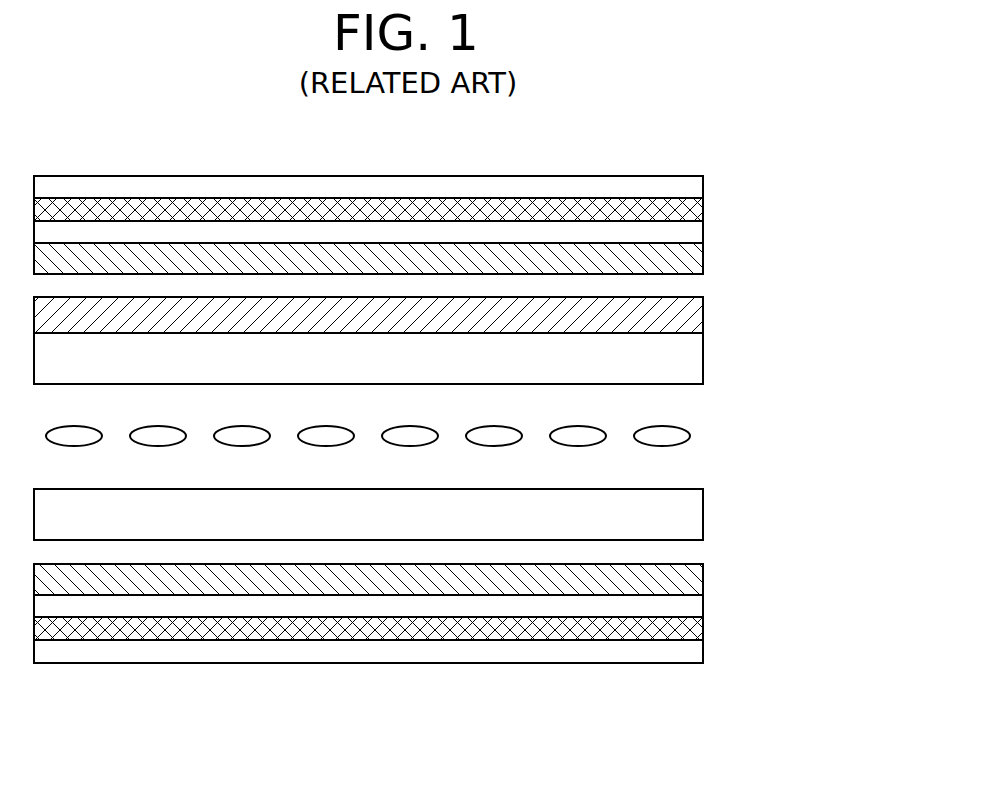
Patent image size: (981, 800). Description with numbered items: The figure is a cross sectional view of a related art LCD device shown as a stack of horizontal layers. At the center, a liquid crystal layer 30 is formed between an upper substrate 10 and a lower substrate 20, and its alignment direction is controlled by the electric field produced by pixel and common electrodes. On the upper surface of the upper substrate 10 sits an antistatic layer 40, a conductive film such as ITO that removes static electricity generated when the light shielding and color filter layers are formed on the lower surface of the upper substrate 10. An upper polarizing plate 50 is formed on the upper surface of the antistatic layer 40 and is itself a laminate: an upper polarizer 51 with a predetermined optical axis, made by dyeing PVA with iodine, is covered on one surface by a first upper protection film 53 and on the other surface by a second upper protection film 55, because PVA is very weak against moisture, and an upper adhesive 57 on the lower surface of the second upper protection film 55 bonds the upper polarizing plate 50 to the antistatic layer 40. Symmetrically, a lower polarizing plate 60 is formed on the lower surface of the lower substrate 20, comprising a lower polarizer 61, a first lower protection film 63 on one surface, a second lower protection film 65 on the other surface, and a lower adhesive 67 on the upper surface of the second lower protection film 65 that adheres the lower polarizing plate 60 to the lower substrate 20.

The upper substrate 10 is at (703, 358).
The lower substrate 20 is at (703, 514).
The liquid crystal layer 30 is at (665, 427).
The antistatic layer 40 is at (703, 314).
The upper polarizing plate 50 is at (433, 225).
The upper polarizer 51 is at (703, 208).
The first upper protection film 53 is at (703, 186).
The second upper protection film 55 is at (703, 231).
The upper adhesive 57 is at (405, 258).
The lower polarizing plate 60 is at (433, 616).
The lower polarizer 61 is at (703, 627).
The first lower protection film 63 is at (405, 654).
The second lower protection film 65 is at (703, 603).
The lower adhesive 67 is at (703, 575).